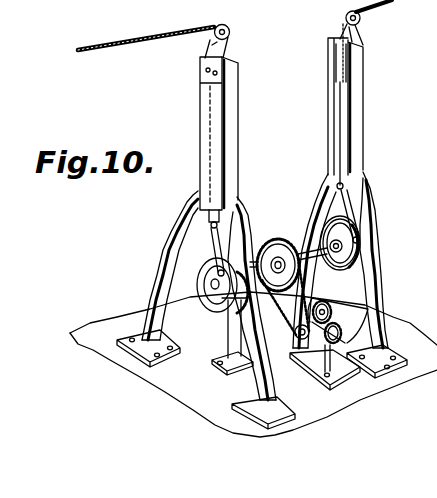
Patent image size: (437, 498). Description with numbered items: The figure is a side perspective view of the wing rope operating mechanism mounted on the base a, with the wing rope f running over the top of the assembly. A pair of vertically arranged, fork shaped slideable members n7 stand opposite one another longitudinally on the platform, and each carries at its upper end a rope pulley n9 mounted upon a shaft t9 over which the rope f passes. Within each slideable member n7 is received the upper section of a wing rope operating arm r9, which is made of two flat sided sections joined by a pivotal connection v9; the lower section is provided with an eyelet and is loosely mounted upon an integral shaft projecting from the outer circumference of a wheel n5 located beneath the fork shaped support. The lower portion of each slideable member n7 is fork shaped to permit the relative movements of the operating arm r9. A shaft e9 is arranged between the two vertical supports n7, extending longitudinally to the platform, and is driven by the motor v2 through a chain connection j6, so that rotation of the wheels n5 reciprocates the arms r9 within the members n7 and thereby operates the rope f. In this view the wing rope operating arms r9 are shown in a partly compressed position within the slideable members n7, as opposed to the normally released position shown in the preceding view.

The base apron a is at (430, 335).
The cord f is at (163, 45).
The rope pulley n9 is at (231, 29).
The shaft t9 is at (373, 24).
The fork shaped slideable member n7 is at (375, 104).
The wing rope operating arm r9 is at (337, 118).
The pivotal connection v9 is at (388, 167).
The wheel n5 is at (383, 214).
The chain connection j6 is at (283, 240).
The shaft e9 is at (313, 227).
The motor v2 is at (350, 310).